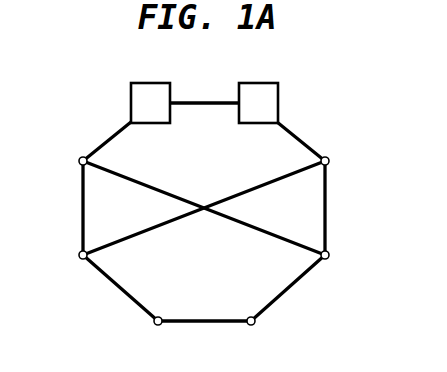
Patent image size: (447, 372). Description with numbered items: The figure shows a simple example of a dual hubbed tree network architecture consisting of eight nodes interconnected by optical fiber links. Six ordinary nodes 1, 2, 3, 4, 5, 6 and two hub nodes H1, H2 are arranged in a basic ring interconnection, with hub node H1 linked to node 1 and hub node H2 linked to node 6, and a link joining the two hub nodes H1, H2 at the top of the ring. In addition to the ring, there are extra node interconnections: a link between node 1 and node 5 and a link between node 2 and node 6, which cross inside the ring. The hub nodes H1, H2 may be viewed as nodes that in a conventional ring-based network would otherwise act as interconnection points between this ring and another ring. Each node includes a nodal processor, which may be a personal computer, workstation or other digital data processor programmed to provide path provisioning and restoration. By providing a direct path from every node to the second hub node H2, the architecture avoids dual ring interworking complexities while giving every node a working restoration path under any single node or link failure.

The node 1 is at (75, 151).
The node 2 is at (74, 264).
The node 3 is at (155, 336).
The node 4 is at (253, 336).
The node 5 is at (332, 259).
The node 6 is at (332, 152).
The hub node H1 is at (150, 103).
The hub node H2 is at (258, 103).